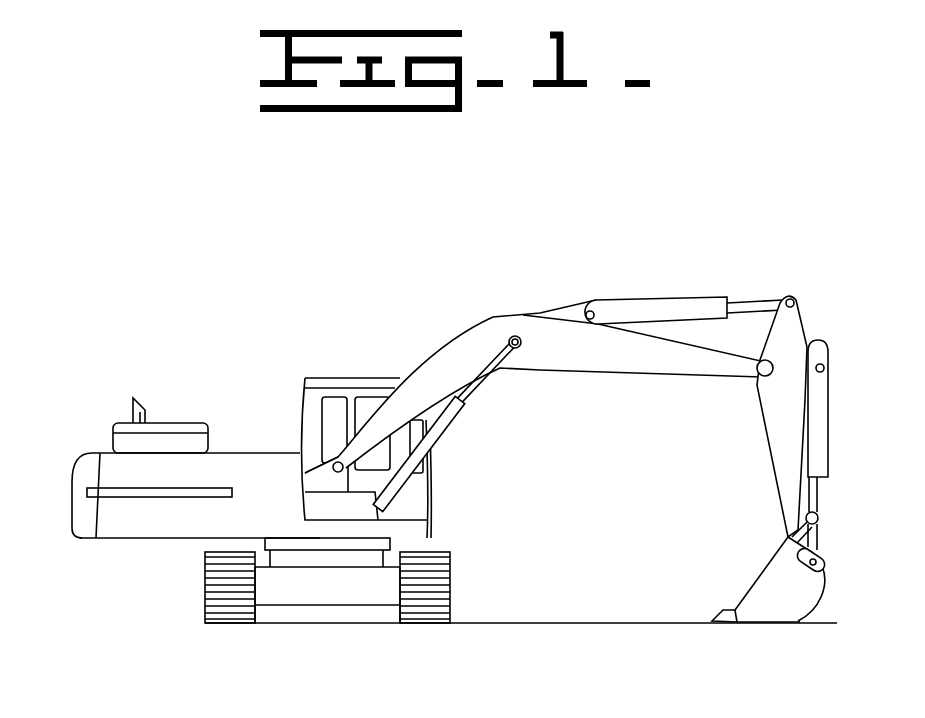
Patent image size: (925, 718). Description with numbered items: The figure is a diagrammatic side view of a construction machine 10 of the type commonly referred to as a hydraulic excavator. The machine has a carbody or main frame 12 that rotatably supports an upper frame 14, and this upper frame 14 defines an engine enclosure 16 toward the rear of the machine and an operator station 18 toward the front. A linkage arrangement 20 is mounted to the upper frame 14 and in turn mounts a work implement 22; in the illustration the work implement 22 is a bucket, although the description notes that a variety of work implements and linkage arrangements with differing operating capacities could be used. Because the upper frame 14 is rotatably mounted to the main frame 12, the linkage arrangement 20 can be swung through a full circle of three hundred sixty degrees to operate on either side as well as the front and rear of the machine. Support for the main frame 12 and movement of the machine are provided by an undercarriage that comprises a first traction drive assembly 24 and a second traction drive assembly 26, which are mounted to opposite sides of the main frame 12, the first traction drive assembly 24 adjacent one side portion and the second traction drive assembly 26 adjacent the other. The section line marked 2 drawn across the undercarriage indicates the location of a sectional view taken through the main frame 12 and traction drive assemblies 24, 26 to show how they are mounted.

The construction machine 10 is at (139, 181).
The carbody or main frame 12 is at (325, 605).
The upper frame 14 is at (262, 453).
The engine enclosure 16 is at (87, 484).
The operator station 18 is at (330, 378).
The linkage arrangement 20 is at (649, 173).
The work implement 22 is at (760, 595).
The first traction drive assembly 24 is at (206, 636).
The second traction drive assembly 26 is at (428, 636).
The section line 2- 2 is at (490, 576).